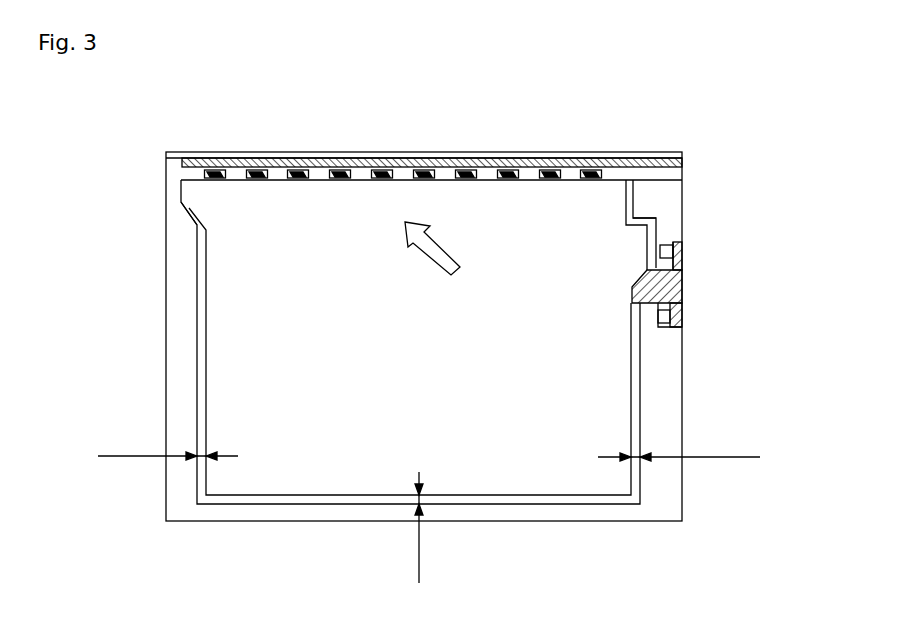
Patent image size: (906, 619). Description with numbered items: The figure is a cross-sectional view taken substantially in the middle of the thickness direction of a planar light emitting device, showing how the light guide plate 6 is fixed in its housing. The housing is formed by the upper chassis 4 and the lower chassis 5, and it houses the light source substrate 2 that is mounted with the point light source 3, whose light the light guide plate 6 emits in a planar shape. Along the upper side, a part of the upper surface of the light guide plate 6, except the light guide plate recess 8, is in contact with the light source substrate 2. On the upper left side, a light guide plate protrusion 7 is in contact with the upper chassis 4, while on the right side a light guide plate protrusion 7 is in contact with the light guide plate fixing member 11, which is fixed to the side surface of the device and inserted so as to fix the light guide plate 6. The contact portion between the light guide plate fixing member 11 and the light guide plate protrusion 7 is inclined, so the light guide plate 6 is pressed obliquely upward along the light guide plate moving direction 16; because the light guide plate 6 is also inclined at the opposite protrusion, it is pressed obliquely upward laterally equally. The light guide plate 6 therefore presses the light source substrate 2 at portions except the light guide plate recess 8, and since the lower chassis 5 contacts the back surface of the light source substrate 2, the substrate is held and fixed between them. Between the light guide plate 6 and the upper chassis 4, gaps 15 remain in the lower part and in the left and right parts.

The light source substrate 2 is at (686, 159).
The point light source 3 is at (462, 160).
The upper chassis 4 is at (187, 308).
The lower chassis 5 is at (320, 151).
The light guide plate 6 is at (606, 380).
The light guide plate protrusion 7 is at (191, 204).
The light guide plate recess 8 is at (619, 164).
The light guide plate fixing member 11 is at (690, 285).
The gaps 15 is at (427, 505).
The light guide plate moving direction 16 is at (469, 268).